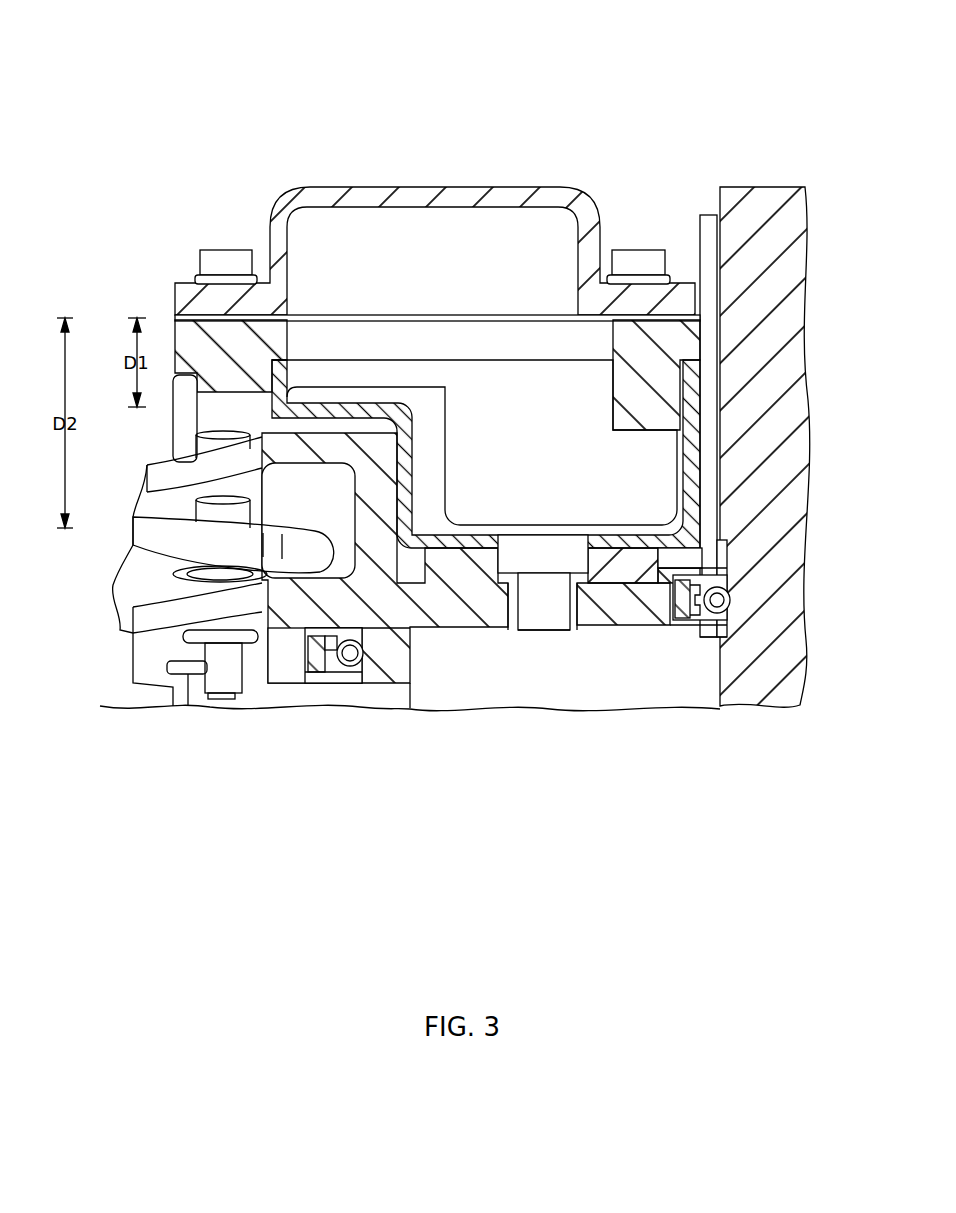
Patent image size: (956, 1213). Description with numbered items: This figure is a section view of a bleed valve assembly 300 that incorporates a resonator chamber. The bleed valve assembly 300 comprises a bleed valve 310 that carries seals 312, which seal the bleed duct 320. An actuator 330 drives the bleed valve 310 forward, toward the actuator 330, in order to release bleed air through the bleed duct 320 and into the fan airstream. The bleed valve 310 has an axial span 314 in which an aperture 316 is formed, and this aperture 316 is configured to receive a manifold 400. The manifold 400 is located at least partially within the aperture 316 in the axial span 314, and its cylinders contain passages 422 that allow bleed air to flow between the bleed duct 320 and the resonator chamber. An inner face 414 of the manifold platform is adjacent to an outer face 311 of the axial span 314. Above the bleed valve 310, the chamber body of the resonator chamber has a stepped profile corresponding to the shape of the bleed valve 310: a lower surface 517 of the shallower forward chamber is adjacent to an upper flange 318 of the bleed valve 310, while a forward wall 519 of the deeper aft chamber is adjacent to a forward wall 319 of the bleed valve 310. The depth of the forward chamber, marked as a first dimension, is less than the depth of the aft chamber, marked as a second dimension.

The bleed valve assembly 300 is at (337, 97).
The bleed valve 310 is at (295, 612).
The outer face 311 is at (478, 585).
The seals 312 is at (338, 672).
The axial span 314 is at (462, 630).
The aperture 316 is at (516, 650).
The upper flange 318 is at (345, 453).
The forward wall 319 is at (375, 485).
The bleed duct 320 is at (578, 716).
The actuator 330 is at (187, 537).
The manifold 400 is at (626, 605).
The inner face 414 is at (616, 570).
The passages 422 is at (545, 652).
The lower surface 517 is at (330, 433).
The forward wall 519 is at (430, 465).